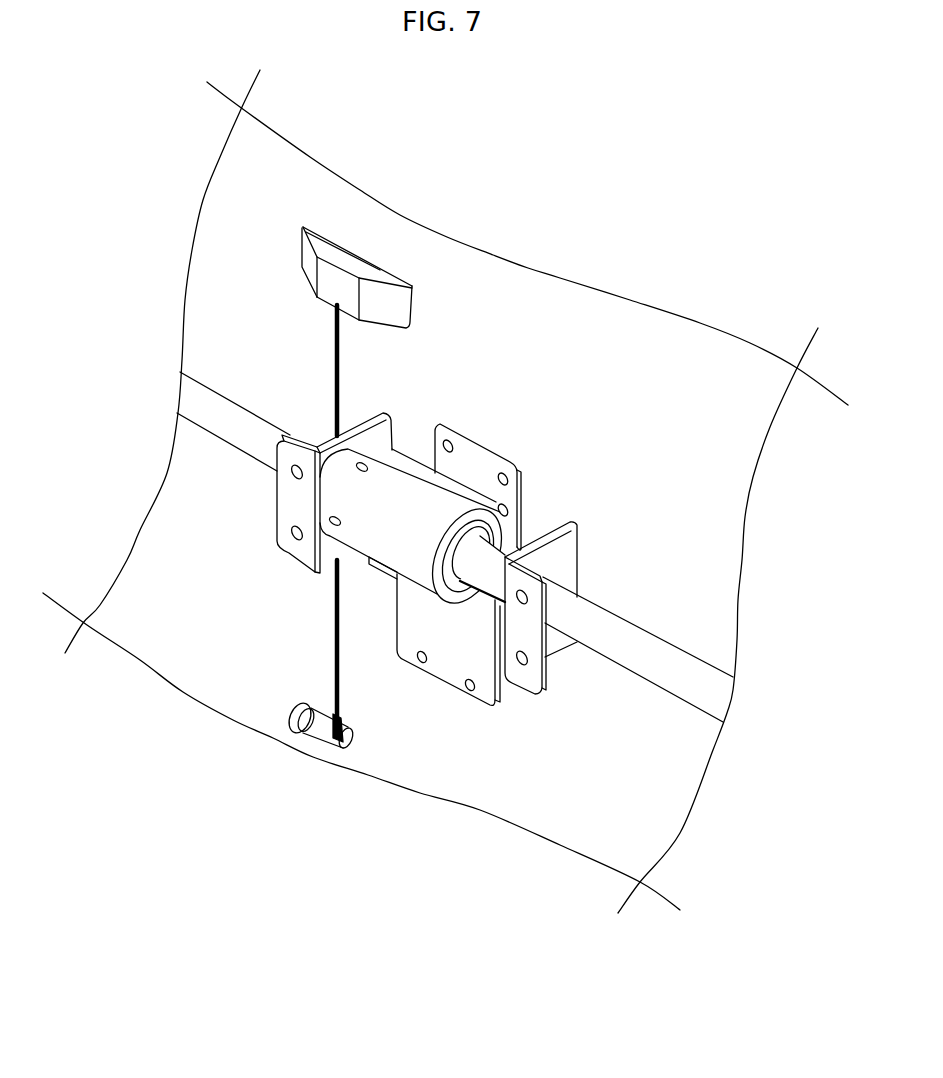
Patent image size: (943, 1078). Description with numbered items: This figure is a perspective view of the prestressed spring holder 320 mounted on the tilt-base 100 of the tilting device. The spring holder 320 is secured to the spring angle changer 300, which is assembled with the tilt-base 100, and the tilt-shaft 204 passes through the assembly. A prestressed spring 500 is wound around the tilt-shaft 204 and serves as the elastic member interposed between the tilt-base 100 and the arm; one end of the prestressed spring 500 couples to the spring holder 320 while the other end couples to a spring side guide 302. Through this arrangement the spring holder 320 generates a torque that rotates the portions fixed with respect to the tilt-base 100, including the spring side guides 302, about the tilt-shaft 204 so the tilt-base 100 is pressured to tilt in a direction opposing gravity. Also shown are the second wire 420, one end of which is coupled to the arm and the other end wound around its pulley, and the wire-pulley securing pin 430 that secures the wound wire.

The tilt-base 100 is at (693, 362).
The tilt-shaft 204 is at (658, 653).
The spring angle changer 300 is at (495, 465).
The spring side guide 302 is at (287, 502).
The spring holder 320 is at (417, 478).
The second wire 420 is at (333, 657).
The wire-pulley securing pin 430 is at (335, 741).
The prestressed spring 500 is at (482, 531).